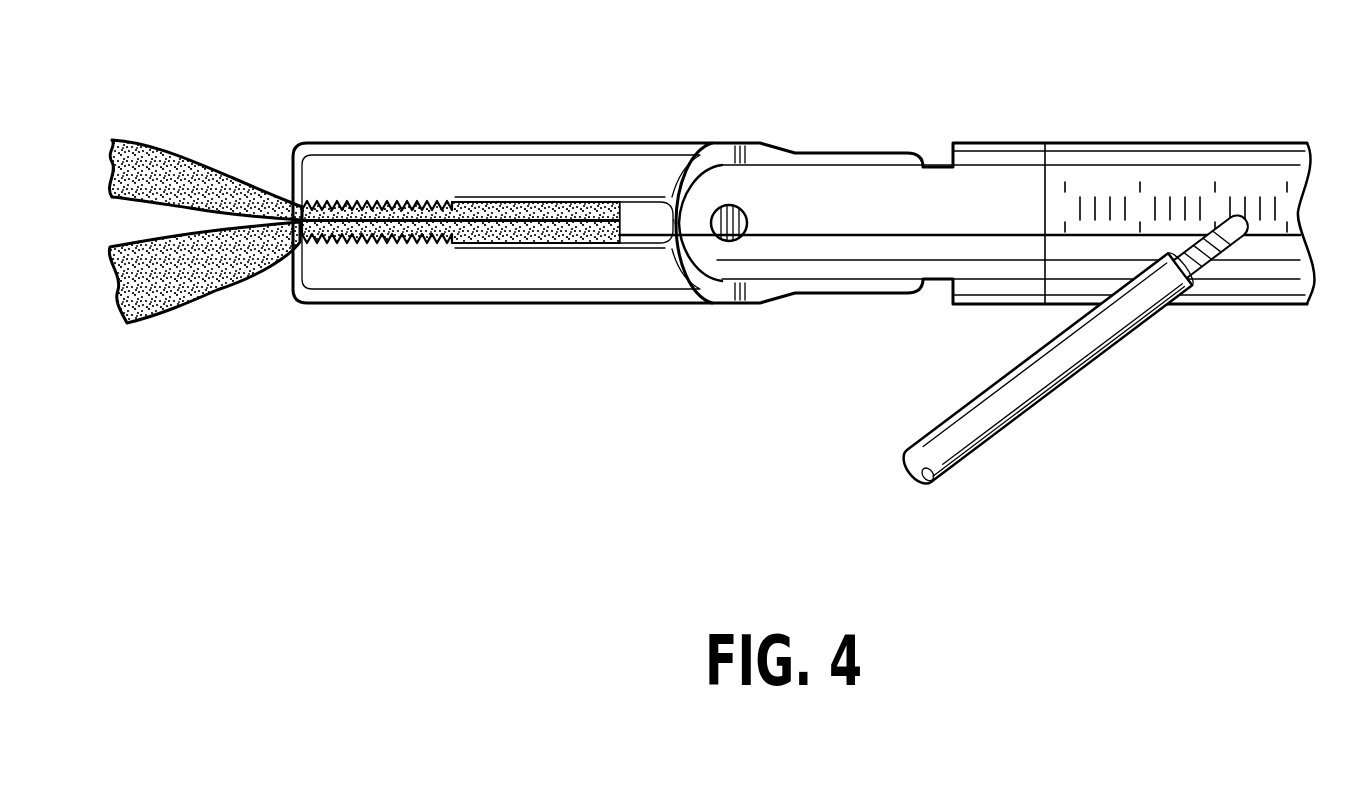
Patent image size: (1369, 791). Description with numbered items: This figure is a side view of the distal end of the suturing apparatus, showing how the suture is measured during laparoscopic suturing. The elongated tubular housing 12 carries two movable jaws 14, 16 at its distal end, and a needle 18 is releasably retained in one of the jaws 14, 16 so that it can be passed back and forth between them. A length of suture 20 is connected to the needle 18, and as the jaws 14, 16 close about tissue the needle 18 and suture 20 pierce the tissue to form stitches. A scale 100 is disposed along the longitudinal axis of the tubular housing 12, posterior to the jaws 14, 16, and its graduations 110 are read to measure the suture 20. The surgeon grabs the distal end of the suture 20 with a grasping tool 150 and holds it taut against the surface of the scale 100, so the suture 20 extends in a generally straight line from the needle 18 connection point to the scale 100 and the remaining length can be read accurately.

The scale 100 is at (1292, 104).
The tubular housing 12 is at (1170, 143).
The jaw 14 is at (397, 142).
The jaw 16 is at (377, 307).
The needle 18 is at (378, 212).
The suture 20 is at (635, 237).
The scale markings 110 is at (1138, 186).
The grasping tool 150 is at (1103, 367).